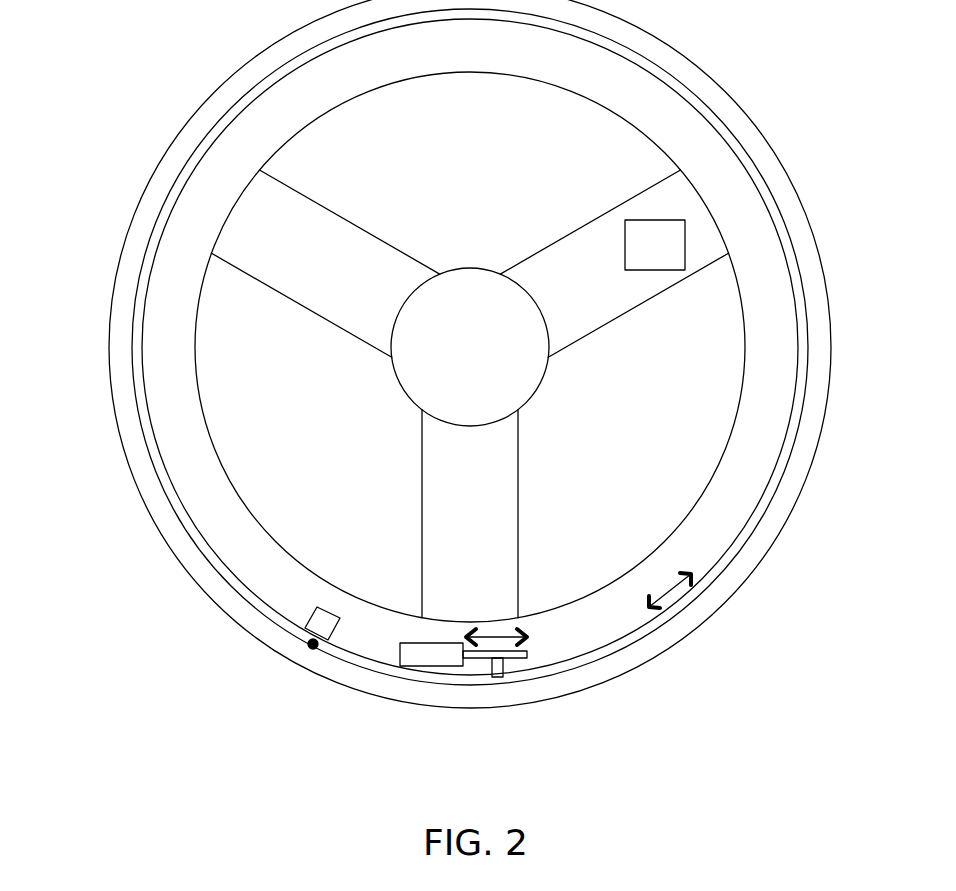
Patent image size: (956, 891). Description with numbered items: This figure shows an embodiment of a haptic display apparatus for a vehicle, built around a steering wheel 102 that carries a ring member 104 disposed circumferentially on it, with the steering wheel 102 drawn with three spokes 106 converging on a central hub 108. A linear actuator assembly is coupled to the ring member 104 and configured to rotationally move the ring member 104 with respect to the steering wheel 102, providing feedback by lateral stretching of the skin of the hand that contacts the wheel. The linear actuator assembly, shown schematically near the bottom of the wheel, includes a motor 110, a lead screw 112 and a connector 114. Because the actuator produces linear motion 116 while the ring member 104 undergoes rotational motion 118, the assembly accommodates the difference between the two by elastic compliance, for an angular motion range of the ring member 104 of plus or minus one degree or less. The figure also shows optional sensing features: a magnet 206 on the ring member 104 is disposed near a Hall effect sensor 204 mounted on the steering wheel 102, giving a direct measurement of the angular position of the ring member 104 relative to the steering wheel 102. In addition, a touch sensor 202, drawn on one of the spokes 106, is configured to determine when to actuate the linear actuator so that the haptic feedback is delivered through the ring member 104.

The steering wheel 102 is at (497, 62).
The ring member 104 is at (247, 97).
The spoke 106 is at (345, 283).
The hub 108 is at (497, 359).
The motor 110 is at (415, 652).
The lead screw 112 is at (518, 656).
The connector 114 is at (496, 659).
The linear motion 116 is at (505, 632).
The rotational motion 118 is at (680, 588).
The touch sensor 202 is at (637, 233).
The Hall effect sensor 204 is at (322, 614).
The magnet 206 is at (311, 649).